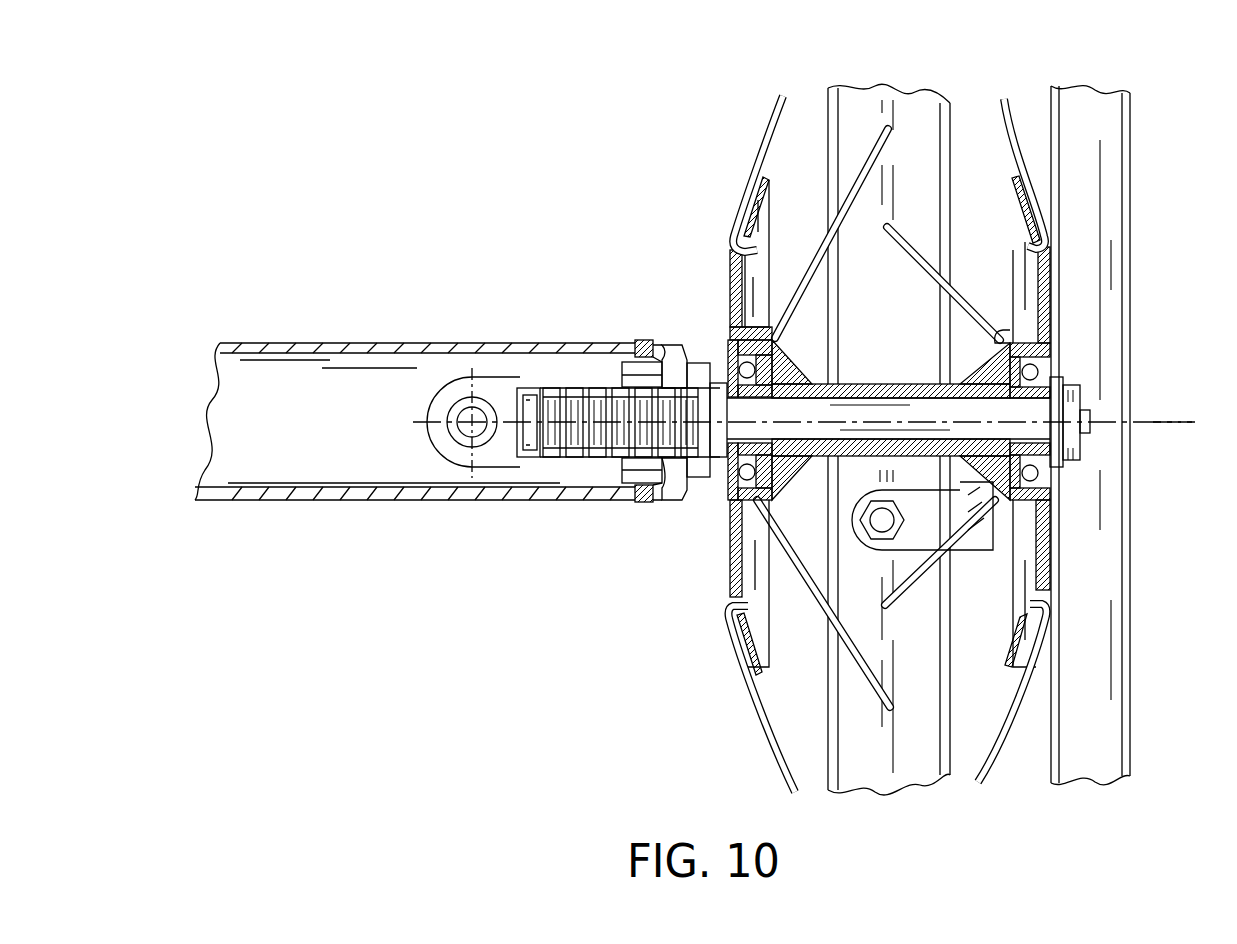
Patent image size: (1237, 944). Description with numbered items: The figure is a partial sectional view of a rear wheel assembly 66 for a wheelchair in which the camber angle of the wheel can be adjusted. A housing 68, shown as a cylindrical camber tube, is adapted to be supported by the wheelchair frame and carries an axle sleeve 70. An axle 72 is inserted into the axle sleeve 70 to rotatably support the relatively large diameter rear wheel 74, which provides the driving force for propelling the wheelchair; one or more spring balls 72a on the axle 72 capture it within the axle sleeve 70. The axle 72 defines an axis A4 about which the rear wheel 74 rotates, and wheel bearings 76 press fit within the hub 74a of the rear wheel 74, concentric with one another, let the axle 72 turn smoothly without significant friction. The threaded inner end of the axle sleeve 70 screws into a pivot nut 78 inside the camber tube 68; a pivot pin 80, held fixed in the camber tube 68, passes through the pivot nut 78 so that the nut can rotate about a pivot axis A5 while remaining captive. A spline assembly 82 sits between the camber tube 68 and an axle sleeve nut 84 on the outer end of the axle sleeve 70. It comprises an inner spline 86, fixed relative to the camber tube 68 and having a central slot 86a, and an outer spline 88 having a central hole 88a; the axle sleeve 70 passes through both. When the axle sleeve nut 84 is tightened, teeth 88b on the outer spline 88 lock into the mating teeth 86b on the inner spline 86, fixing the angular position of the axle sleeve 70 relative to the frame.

The rear wheel assembly 66 is at (478, 84).
The housing 68 is at (310, 341).
The axle sleeve 70 is at (596, 457).
The axle 72 is at (727, 500).
The spring balls 72a is at (533, 347).
The rear wheel 74 is at (882, 446).
The hub 74a is at (730, 270).
The wheel bearings 76 is at (723, 347).
The pivot nut 78 is at (460, 345).
The pivot pin 80 is at (471, 448).
The spline assembly 82 is at (623, 634).
The axle sleeve nut 84 is at (697, 347).
The inner spline 86 is at (641, 343).
The central slot 86a is at (638, 470).
The mating teeth 86b is at (665, 485).
The outer spline 88 is at (667, 347).
The central hole 88a is at (660, 502).
The teeth 88b is at (563, 347).
The axis A4 is at (1153, 422).
The pivot axis A5 is at (443, 423).